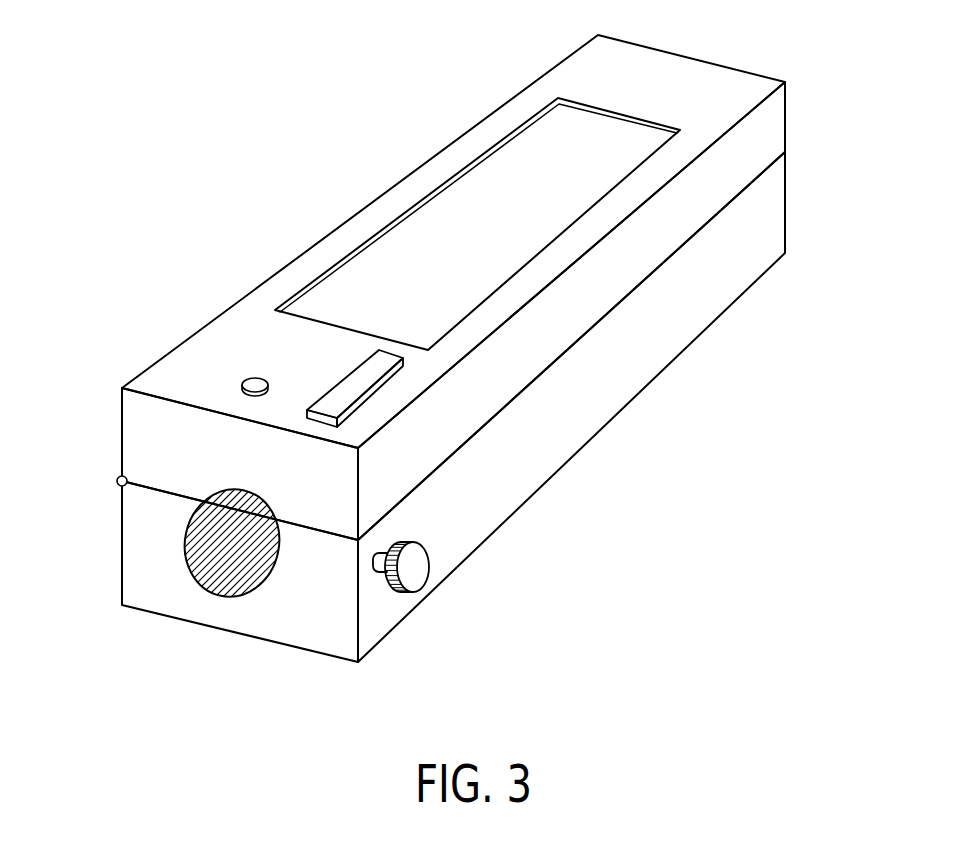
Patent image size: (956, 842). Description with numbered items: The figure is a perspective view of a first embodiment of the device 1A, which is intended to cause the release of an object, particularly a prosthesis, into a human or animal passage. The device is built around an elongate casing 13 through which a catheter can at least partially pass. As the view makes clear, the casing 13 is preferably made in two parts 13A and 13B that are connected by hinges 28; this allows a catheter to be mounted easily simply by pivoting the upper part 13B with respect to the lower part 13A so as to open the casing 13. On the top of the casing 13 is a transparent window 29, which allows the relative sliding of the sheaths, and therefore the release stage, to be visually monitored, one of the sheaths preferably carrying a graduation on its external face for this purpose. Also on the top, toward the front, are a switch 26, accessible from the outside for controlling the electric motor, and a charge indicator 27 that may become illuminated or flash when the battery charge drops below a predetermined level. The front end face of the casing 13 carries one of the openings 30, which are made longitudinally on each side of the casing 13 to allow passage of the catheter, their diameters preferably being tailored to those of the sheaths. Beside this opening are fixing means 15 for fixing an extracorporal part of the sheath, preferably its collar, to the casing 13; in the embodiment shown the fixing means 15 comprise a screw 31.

The device 1A is at (462, 359).
The casing 13 is at (503, 348).
The casing part 13A is at (712, 303).
The casing part 13B is at (773, 118).
The fixing means 15 is at (452, 616).
The switch 26 is at (340, 380).
The charge indicator 27 is at (248, 379).
The hinges 28 is at (116, 481).
The transparent window 29 is at (397, 238).
The openings 30 is at (225, 610).
The screw 31 is at (418, 569).